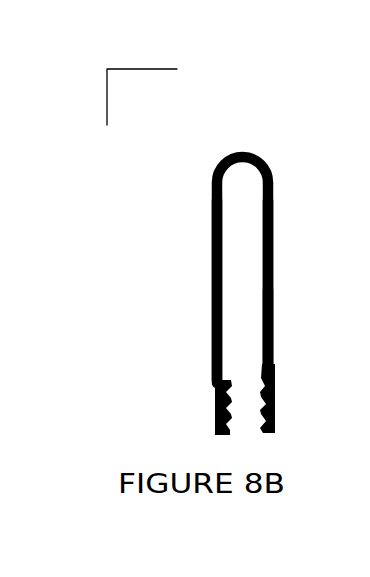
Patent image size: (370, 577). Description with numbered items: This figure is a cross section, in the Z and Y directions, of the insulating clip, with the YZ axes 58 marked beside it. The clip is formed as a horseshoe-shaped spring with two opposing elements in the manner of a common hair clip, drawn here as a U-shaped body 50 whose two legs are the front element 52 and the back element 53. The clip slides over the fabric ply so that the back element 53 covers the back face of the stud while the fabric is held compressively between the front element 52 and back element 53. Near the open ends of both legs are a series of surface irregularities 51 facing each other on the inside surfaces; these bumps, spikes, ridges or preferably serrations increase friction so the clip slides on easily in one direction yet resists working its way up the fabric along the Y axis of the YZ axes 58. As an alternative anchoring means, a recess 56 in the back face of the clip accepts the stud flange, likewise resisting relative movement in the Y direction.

The YZ axes 58 is at (130, 63).
The pin / fastener 50 is at (210, 175).
The back element 53 is at (211, 296).
The front element 52 is at (276, 293).
The recess 56 is at (227, 375).
The surface irregularities 51 is at (256, 374).